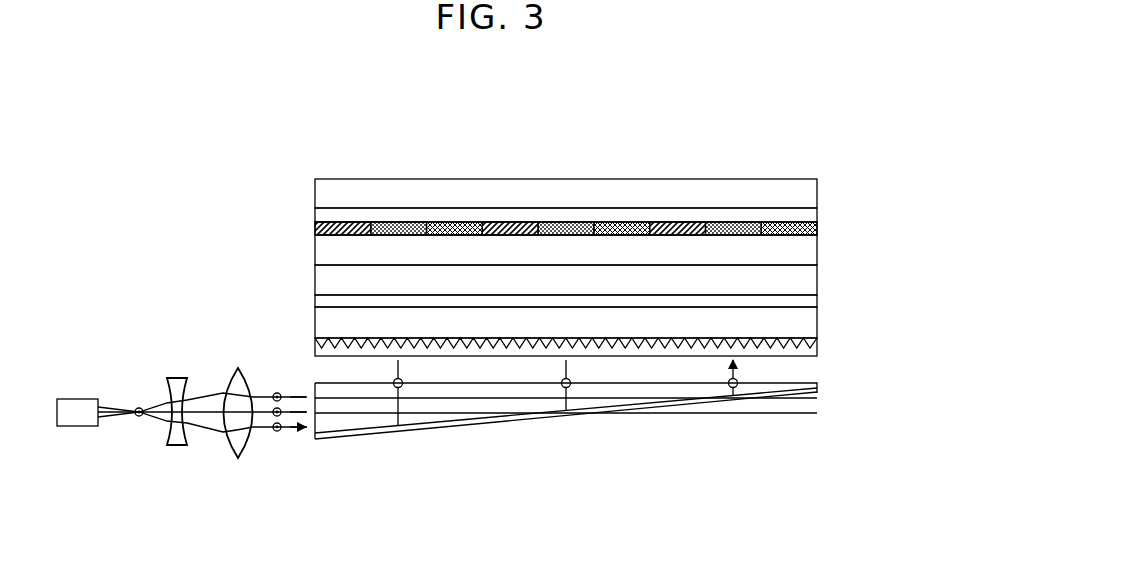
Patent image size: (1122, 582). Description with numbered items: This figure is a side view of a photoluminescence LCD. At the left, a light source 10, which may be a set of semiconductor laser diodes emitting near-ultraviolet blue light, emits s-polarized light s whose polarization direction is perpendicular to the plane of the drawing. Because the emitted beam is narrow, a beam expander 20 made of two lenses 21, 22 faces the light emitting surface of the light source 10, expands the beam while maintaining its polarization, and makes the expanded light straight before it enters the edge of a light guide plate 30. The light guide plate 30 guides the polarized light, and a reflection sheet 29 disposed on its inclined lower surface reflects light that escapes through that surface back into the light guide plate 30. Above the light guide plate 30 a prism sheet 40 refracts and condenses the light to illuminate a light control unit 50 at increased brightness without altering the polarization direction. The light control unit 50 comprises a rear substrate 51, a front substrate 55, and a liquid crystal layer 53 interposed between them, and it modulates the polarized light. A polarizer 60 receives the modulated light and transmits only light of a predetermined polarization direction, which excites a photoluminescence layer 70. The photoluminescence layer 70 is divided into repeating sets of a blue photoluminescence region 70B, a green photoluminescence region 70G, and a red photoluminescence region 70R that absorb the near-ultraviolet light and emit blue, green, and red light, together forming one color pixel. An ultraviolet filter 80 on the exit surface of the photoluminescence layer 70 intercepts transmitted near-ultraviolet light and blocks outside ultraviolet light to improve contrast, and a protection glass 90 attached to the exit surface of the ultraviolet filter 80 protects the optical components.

The light source 10 is at (77, 398).
The s-polarized light s is at (139, 407).
The beam expander 20 is at (210, 470).
The lens 21 is at (177, 447).
The lens 22 is at (239, 440).
The reflection sheet 29 is at (757, 400).
The light guide plate 30 is at (595, 402).
The prism sheet 40 is at (817, 354).
The light control unit 50 is at (621, 301).
The rear substrate 51 is at (595, 322).
The liquid crystal layer 53 is at (817, 300).
The front substrate 55 is at (817, 285).
The polarizer 60 is at (817, 252).
The photoluminescence layer 70 is at (566, 157).
The blue photoluminescence region 70B is at (343, 222).
The green photoluminescence region 70G is at (403, 222).
The red photoluminescence region 70R is at (622, 184).
The ultraviolet filter 80 is at (817, 215).
The protection glass 90 is at (817, 193).